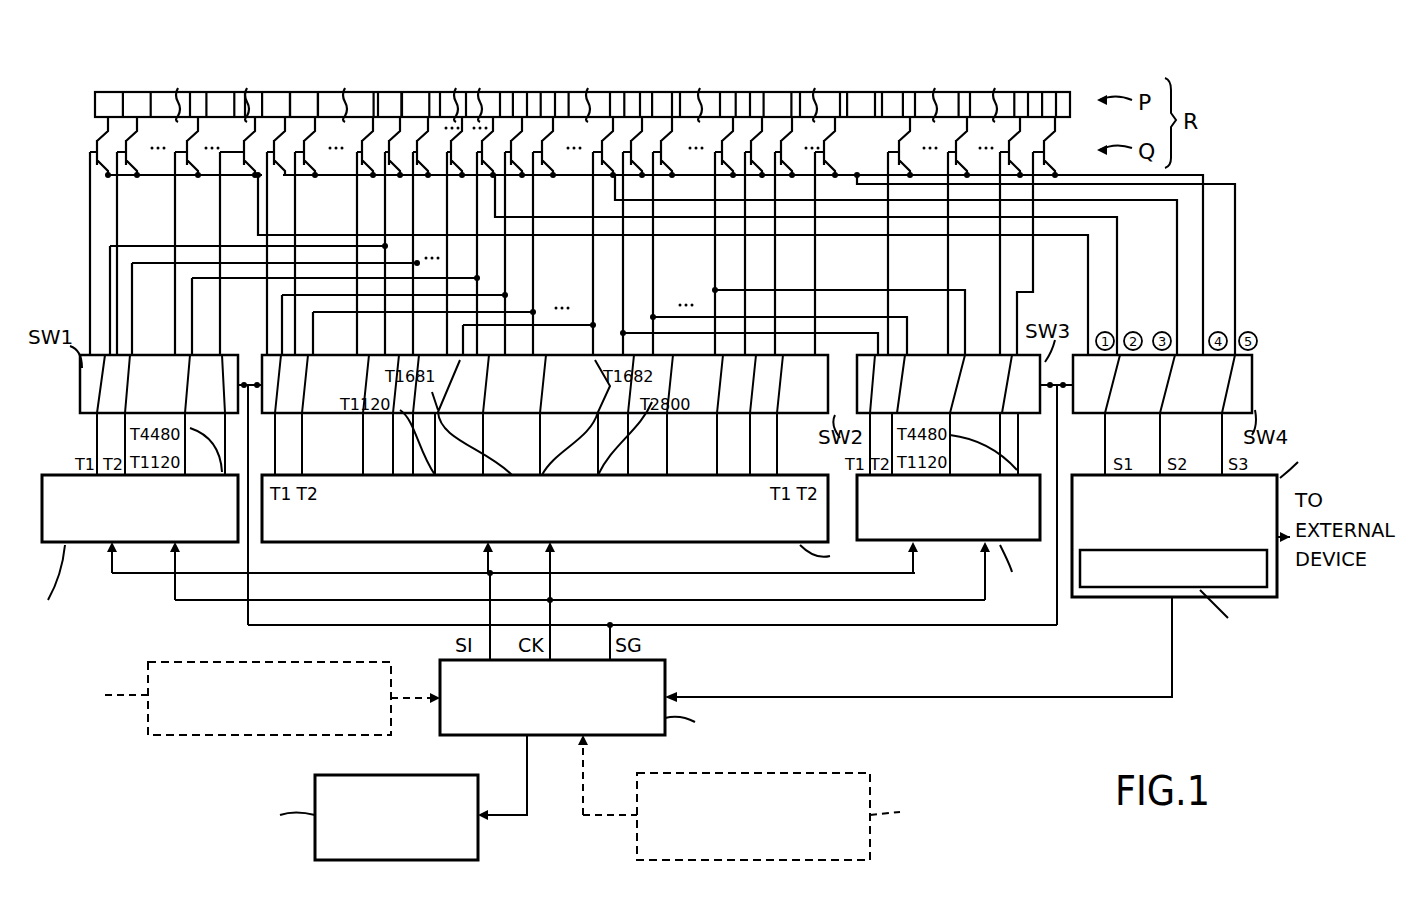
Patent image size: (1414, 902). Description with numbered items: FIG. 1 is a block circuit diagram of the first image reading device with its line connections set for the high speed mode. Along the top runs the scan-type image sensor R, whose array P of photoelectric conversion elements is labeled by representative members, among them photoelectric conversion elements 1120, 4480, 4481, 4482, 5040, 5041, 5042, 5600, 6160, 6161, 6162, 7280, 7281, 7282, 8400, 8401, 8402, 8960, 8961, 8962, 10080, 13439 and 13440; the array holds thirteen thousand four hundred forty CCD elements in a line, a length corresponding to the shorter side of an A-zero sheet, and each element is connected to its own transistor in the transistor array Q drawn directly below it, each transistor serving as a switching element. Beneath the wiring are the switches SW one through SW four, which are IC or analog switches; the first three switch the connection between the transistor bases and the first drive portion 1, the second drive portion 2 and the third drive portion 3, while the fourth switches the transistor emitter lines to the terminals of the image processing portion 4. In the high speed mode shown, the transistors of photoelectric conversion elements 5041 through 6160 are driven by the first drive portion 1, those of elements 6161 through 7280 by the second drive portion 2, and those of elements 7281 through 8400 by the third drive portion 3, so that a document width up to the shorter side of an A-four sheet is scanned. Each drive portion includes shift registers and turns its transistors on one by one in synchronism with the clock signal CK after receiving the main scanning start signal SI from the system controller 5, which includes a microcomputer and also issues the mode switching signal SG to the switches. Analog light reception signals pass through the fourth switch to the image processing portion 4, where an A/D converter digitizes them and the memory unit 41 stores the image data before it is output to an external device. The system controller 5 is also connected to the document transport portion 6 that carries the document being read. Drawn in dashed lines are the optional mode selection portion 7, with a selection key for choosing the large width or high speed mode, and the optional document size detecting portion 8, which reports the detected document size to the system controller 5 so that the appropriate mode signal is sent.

The first drive portion 1 is at (103, 84).
The second drive portion 2 is at (140, 63).
The third drive portion 3 is at (948, 531).
The image processing portion 4 is at (1193, 522).
The memory unit 41 is at (1173, 594).
The system controller 5 is at (576, 700).
The document transport portion 6 is at (366, 817).
The mode selection portion 7 is at (237, 698).
The document size detecting portion 8 is at (781, 816).
The photoelectric conversion element 1120 is at (193, 92).
The photoelectric conversion element 4480 is at (246, 92).
The photoelectric conversion element 4481 is at (290, 92).
The photoelectric conversion element 4482 is at (318, 92).
The photoelectric conversion element 5040 is at (378, 92).
The photoelectric conversion element 5041 is at (402, 92).
The photoelectric conversion element 5042 is at (440, 92).
The photoelectric conversion element 5600 is at (466, 92).
The photoelectric conversion element 6160 is at (500, 92).
The photoelectric conversion element 6161 is at (527, 92).
The photoelectric conversion element 6162 is at (555, 92).
The photoelectric conversion element 7280 is at (610, 92).
The photoelectric conversion element 7281 is at (640, 92).
The photoelectric conversion element 7282 is at (672, 92).
The photoelectric conversion element 8400 is at (720, 92).
The photoelectric conversion element 8401 is at (750, 92).
The photoelectric conversion element 8402 is at (800, 92).
The photoelectric conversion element 8960 is at (840, 92).
The photoelectric conversion element 8961 is at (882, 92).
The photoelectric conversion element 8962 is at (915, 92).
The photoelectric conversion element 10080 is at (970, 92).
The photoelectric conversion element 13439 is at (1028, 92).
The photoelectric conversion element 13440 is at (1060, 92).